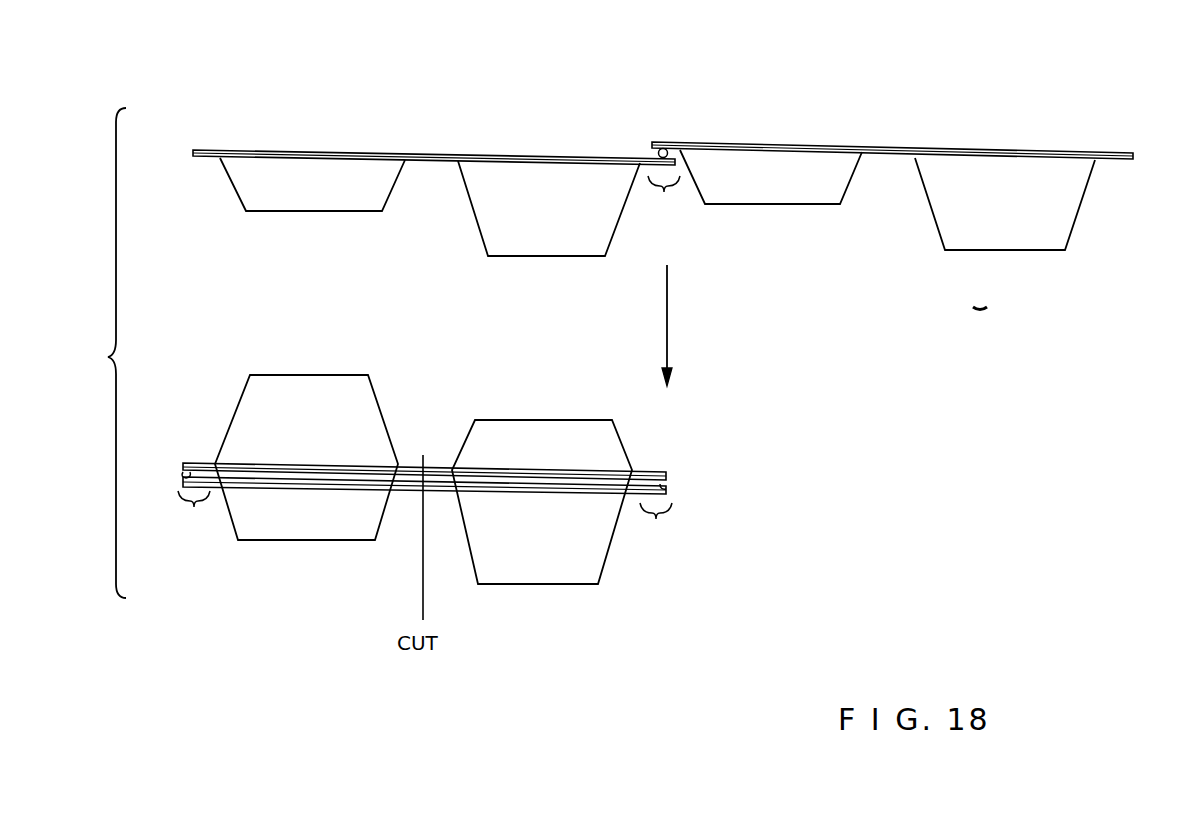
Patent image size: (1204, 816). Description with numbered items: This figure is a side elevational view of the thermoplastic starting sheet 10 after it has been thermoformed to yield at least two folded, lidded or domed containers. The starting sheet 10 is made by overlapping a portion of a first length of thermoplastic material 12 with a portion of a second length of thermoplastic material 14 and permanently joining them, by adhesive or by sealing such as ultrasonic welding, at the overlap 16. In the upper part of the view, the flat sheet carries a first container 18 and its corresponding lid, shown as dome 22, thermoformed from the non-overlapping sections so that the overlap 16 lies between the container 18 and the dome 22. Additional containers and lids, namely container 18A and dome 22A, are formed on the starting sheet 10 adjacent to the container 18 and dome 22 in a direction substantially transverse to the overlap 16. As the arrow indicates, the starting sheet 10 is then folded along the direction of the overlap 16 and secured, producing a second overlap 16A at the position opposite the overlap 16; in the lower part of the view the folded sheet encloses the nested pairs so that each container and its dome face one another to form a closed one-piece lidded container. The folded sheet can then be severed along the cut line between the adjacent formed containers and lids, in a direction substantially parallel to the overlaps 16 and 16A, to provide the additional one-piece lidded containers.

The thermoplastic starting sheet 10 is at (850, 93).
The first length of thermoplastic material 12 is at (205, 148).
The second length of thermoplastic material 14 is at (1118, 153).
The overlap 16 is at (660, 364).
The second overlap 16A is at (190, 518).
The first container 18 is at (542, 258).
The additional container 18A is at (1022, 252).
The dome 22 is at (770, 206).
The additional dome 22A is at (298, 212).